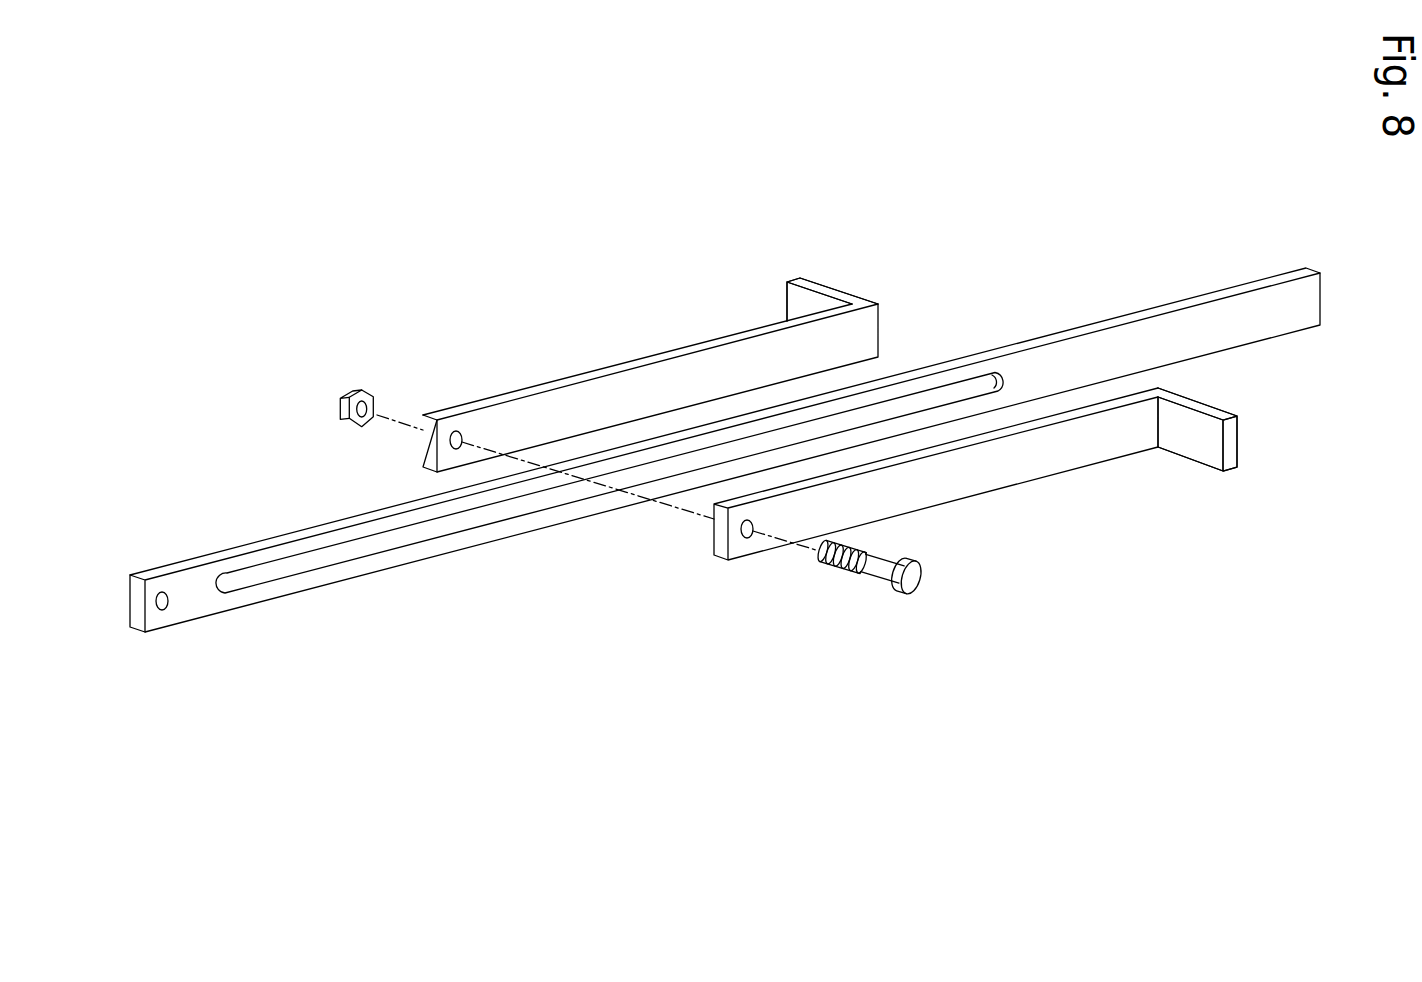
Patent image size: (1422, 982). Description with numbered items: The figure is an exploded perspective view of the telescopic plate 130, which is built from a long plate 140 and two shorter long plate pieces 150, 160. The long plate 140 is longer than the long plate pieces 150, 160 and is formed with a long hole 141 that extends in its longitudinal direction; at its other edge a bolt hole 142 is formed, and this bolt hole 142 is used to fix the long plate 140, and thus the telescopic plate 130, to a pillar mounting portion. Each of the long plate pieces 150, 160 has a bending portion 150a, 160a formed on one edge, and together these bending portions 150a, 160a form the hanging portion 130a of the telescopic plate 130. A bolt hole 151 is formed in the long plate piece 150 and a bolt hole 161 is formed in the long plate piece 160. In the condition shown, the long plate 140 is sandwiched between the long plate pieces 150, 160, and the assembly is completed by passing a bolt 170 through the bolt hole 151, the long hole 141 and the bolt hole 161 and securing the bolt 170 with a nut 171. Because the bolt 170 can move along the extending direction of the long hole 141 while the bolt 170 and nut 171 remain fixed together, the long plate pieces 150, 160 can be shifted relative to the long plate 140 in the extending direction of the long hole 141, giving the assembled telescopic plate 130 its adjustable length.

The telescopic plate 130 is at (688, 283).
The hanging portion 130a is at (851, 280).
The long plate 140 is at (1060, 356).
The long hole 141 is at (388, 537).
The bolt hole 142 is at (168, 603).
The long plate piece 150 is at (611, 384).
The bending portion 150a is at (826, 268).
The bolt hole 151 is at (456, 431).
The long plate piece 160 is at (985, 477).
The bending portion 160a is at (1190, 440).
The bolt hole 161 is at (751, 539).
The bolt 170 is at (885, 568).
The nut 171 is at (355, 389).